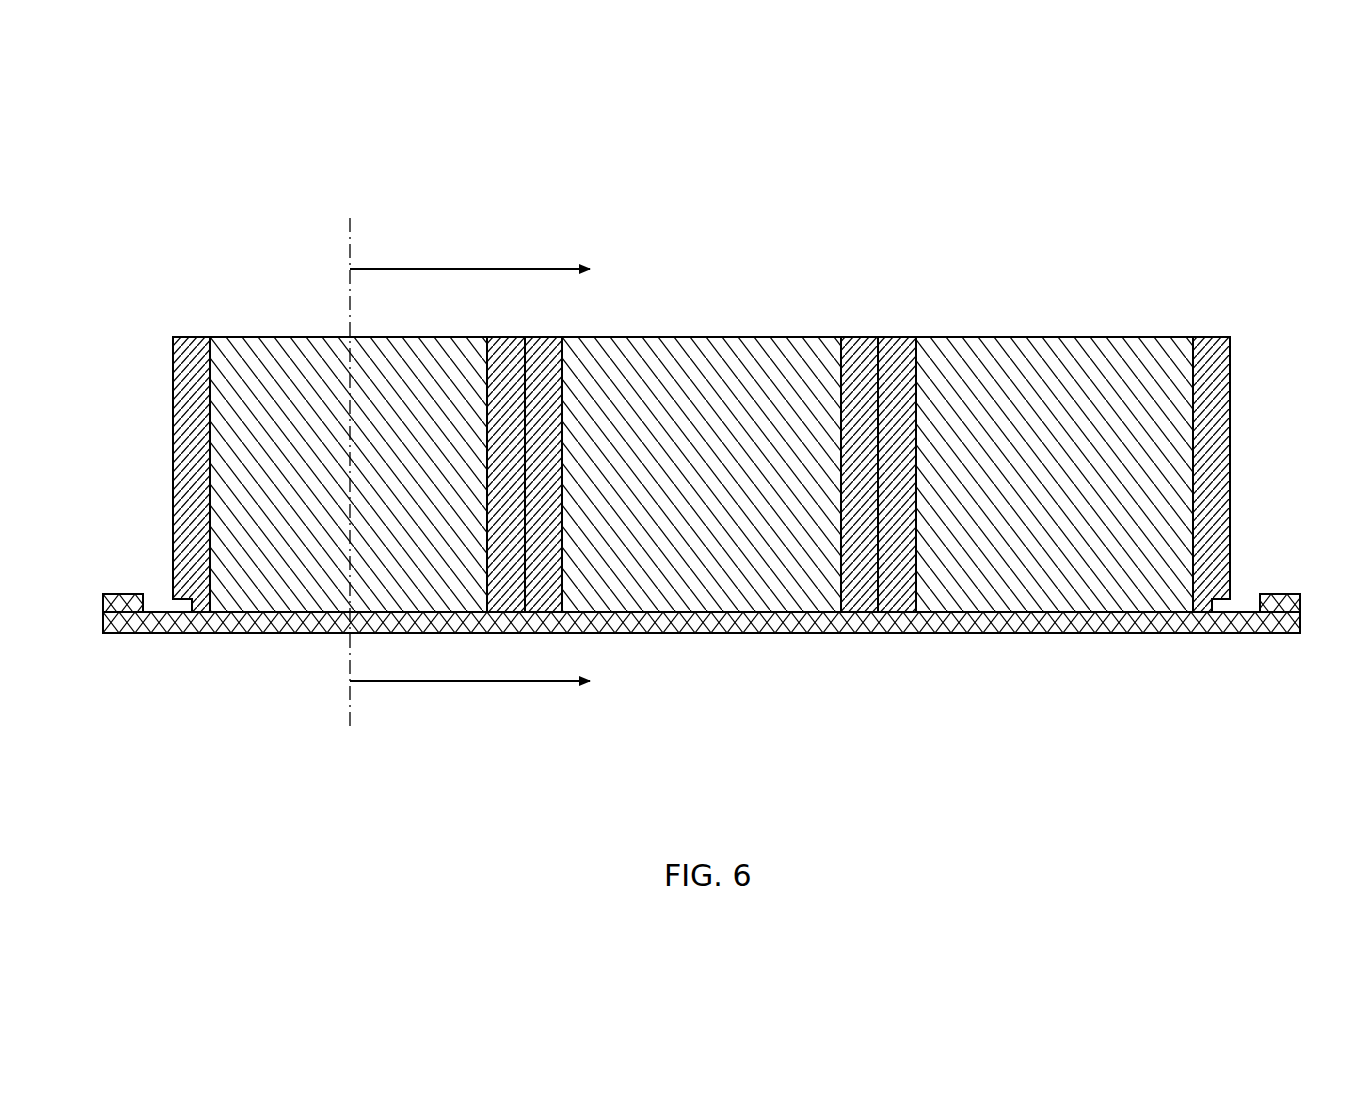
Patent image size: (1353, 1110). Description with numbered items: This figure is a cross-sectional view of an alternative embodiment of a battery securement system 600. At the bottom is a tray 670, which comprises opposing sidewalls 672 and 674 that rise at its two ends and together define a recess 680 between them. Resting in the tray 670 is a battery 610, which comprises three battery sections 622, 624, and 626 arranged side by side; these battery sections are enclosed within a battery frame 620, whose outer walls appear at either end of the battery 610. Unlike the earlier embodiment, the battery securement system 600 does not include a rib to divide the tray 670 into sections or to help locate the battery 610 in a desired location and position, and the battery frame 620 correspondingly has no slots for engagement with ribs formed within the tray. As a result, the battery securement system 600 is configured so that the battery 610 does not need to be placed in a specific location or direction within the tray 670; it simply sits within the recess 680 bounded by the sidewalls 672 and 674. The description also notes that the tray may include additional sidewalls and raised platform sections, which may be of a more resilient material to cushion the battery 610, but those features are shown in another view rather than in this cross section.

The battery securement system 600 is at (1221, 98).
The battery 610 is at (921, 234).
The battery frame 620 is at (192, 340).
The battery section 622 is at (1113, 362).
The battery section 624 is at (693, 355).
The battery section 626 is at (243, 360).
The tray 670 is at (1265, 630).
The sidewall 672 is at (1285, 604).
The sidewall 674 is at (125, 598).
The recess 680 is at (1241, 590).